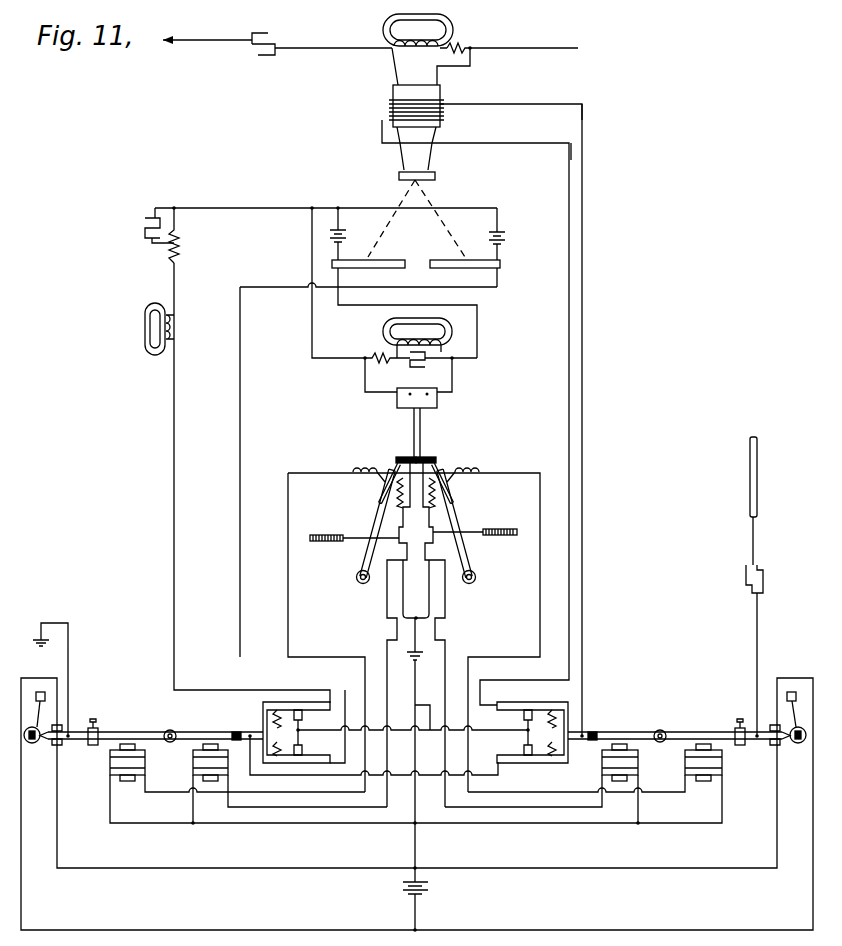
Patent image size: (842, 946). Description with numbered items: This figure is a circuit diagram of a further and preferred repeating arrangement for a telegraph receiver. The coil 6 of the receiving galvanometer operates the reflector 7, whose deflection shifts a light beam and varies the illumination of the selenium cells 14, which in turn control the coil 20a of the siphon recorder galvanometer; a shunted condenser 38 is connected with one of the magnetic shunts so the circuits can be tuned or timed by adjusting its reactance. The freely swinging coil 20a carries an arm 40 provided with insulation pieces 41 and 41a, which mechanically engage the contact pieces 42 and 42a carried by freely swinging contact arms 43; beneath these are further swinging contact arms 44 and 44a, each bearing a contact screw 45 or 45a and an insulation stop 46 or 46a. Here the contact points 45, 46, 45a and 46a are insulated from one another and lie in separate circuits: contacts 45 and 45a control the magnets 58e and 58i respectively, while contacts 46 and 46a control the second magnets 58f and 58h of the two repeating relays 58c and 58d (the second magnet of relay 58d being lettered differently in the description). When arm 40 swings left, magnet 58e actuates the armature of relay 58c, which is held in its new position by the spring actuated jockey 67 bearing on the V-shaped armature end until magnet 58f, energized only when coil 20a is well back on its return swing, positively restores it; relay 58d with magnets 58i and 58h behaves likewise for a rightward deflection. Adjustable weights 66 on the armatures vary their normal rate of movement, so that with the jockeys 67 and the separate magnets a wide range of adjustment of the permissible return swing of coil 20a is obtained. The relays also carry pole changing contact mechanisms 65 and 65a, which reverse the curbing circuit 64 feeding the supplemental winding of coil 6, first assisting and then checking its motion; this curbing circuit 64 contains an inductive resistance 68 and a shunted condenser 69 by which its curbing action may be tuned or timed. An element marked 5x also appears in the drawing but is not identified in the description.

The coil of the receiving galvanometer 6 is at (425, 95).
The reflector 7 is at (438, 176).
The selenium cells 14 is at (332, 264).
The shunted condenser 69 is at (143, 232).
The inductive resistance 68 is at (150, 352).
The curbing circuit 64 is at (174, 455).
The shunted condenser 38 is at (428, 360).
The coil of the siphon recorder galvanometer 20a is at (440, 398).
The arm 40 is at (421, 432).
The insulation piece 41 is at (404, 457).
The insulation piece 41a is at (430, 457).
The contact piece 42 is at (398, 465).
The contact piece 42a is at (452, 470).
The contact screw 45 is at (353, 472).
The contact screw 45a is at (480, 472).
The insulation stop 46 is at (397, 490).
The insulation stop 46a is at (435, 492).
The contact arm 43 is at (385, 500).
The contact arm 44 is at (343, 538).
The contact arm 44a is at (517, 532).
The lamp 5x is at (749, 494).
The adjustable weight 66 is at (95, 728).
The spring actuated jockey 67 is at (33, 745).
The repeating relay 58c is at (162, 723).
The repeating relay 58d is at (658, 722).
The magnet 58e is at (110, 770).
The magnet 58f is at (193, 760).
The electromagnet 58h is at (638, 764).
The magnet 58i is at (722, 765).
The pole changing contact mechanism 65 is at (270, 735).
The pole changing contact mechanism 65a is at (555, 735).